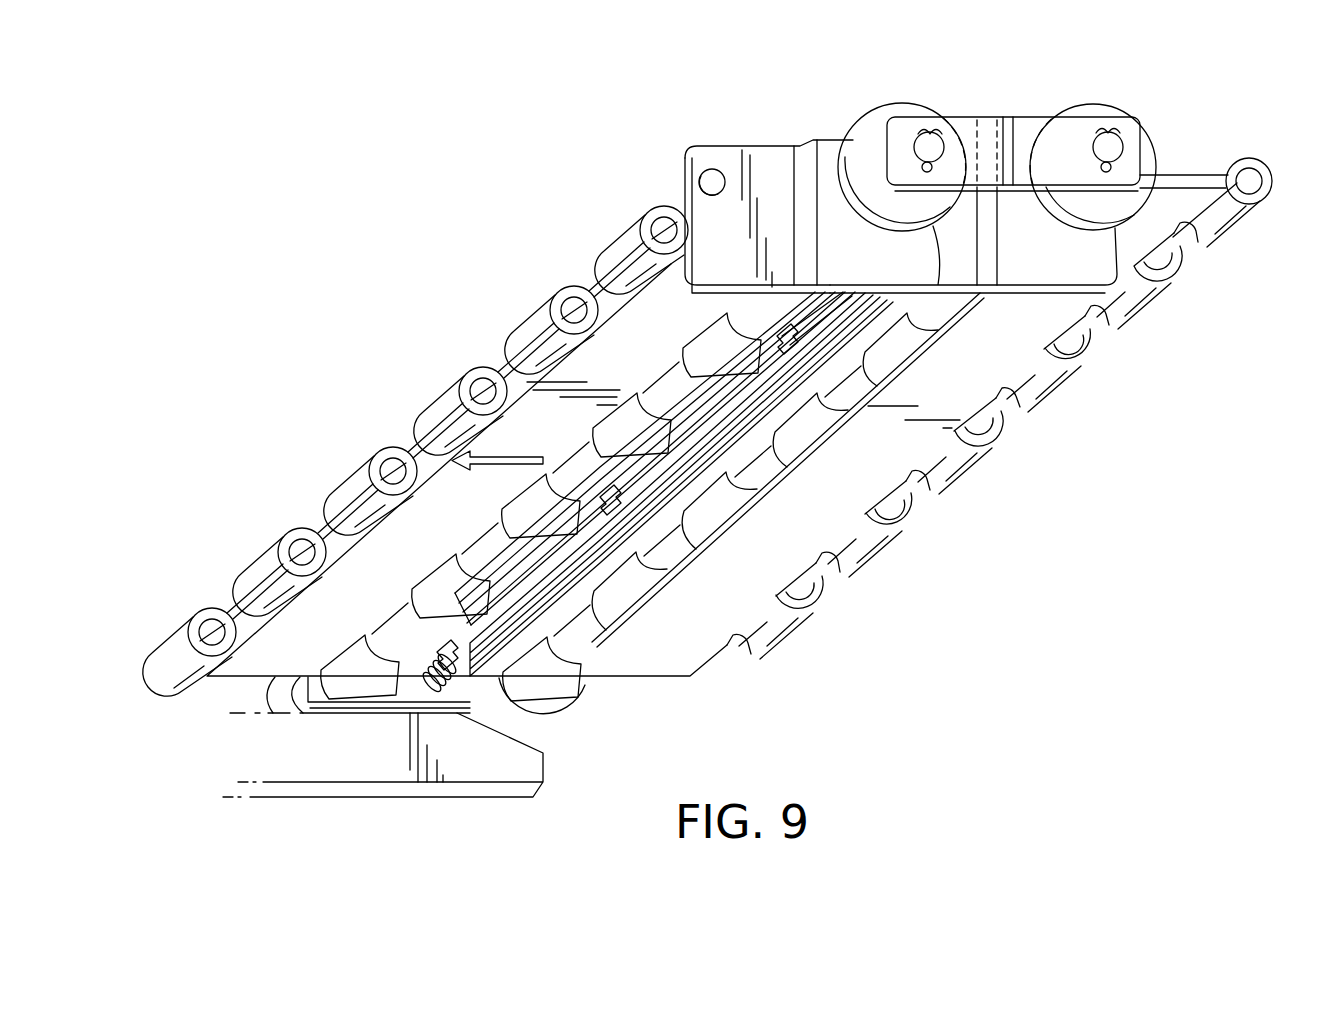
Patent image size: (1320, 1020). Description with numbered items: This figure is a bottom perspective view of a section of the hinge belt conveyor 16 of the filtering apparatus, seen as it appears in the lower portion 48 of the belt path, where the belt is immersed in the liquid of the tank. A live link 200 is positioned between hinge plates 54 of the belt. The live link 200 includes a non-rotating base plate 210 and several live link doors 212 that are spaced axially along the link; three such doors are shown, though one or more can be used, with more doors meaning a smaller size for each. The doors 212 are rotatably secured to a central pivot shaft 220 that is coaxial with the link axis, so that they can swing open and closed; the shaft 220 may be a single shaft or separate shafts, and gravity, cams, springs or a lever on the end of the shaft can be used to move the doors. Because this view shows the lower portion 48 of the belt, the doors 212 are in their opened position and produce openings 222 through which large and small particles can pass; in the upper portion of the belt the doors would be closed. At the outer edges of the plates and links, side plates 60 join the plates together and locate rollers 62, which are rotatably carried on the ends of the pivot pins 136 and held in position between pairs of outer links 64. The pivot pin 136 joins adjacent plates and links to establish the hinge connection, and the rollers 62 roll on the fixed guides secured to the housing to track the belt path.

The hinge belt conveyor 16 is at (718, 131).
The lower portion 48 is at (1193, 118).
The hinge plates 54 is at (250, 662).
The side plates 60 is at (770, 165).
The rollers 62 is at (920, 108).
The outer links 64 is at (1027, 122).
The pivot pin 136 is at (925, 138).
The live link 200 is at (563, 607).
The base plate 210 is at (408, 666).
The live link doors 212 is at (834, 322).
The central pivot shaft 220 is at (528, 587).
The openings 222 is at (712, 400).